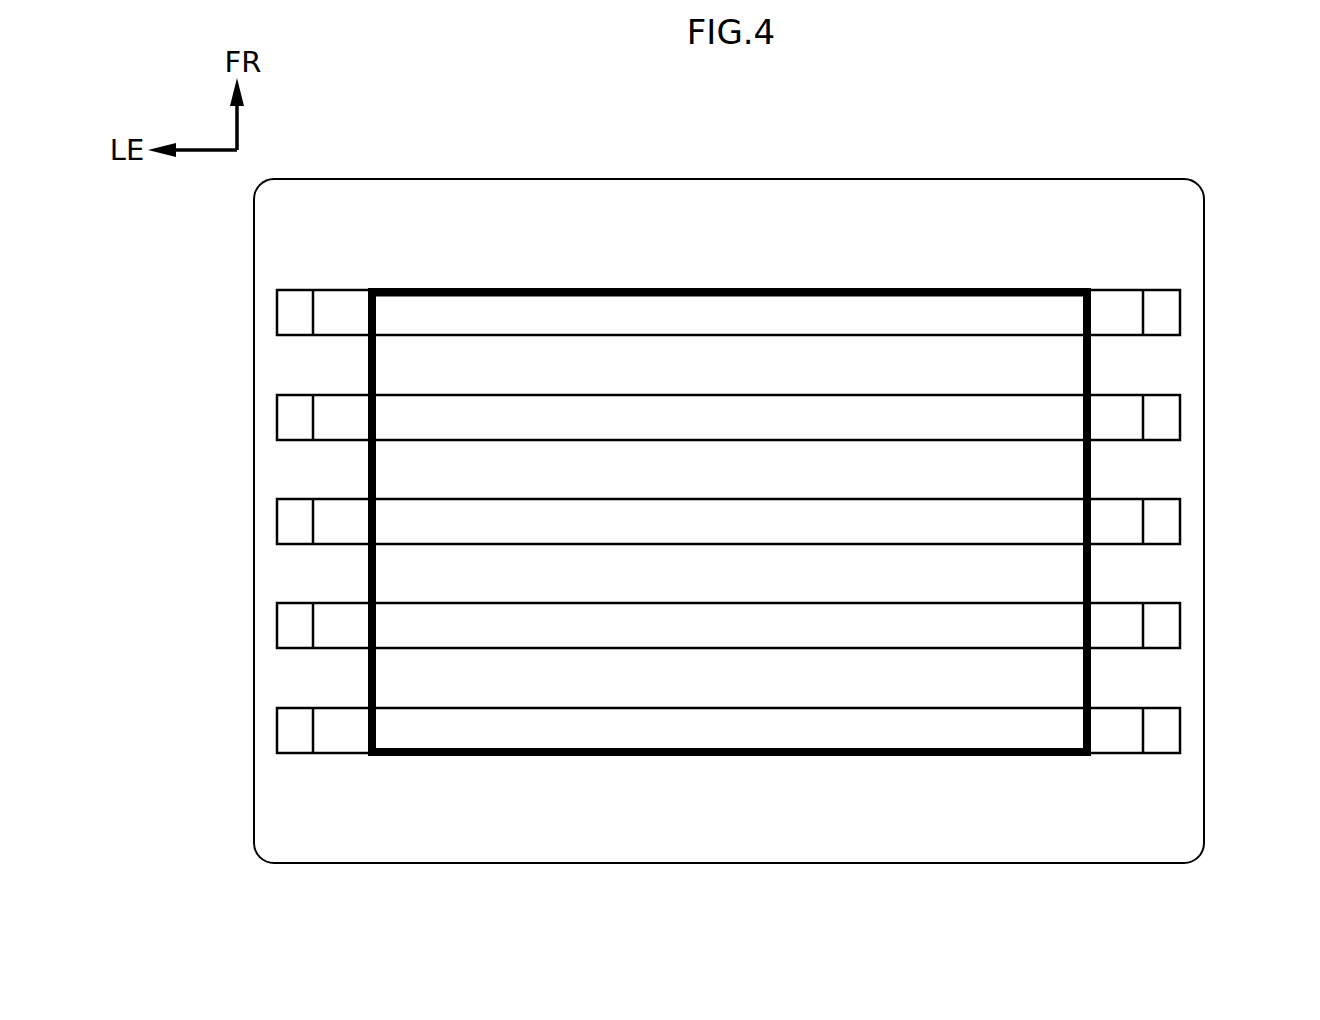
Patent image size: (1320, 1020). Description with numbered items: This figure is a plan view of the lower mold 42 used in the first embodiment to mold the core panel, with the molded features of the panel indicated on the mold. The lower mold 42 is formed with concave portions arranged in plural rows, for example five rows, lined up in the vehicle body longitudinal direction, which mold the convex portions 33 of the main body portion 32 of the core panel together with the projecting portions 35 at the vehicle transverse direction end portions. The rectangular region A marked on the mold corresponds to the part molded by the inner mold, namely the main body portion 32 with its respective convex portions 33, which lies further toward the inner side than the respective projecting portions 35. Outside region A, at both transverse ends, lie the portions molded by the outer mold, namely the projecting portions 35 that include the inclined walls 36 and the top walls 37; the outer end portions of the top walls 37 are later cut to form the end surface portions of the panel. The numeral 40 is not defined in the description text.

The display unit housing 40 is at (1203, 151).
The lower mold 42 is at (815, 177).
The main body portion 32 is at (563, 757).
The convex portions 33 is at (658, 720).
The projecting portions 35 is at (1125, 757).
The inclined walls 36 is at (1105, 732).
The top walls 37 is at (1167, 528).
The region A is at (650, 288).